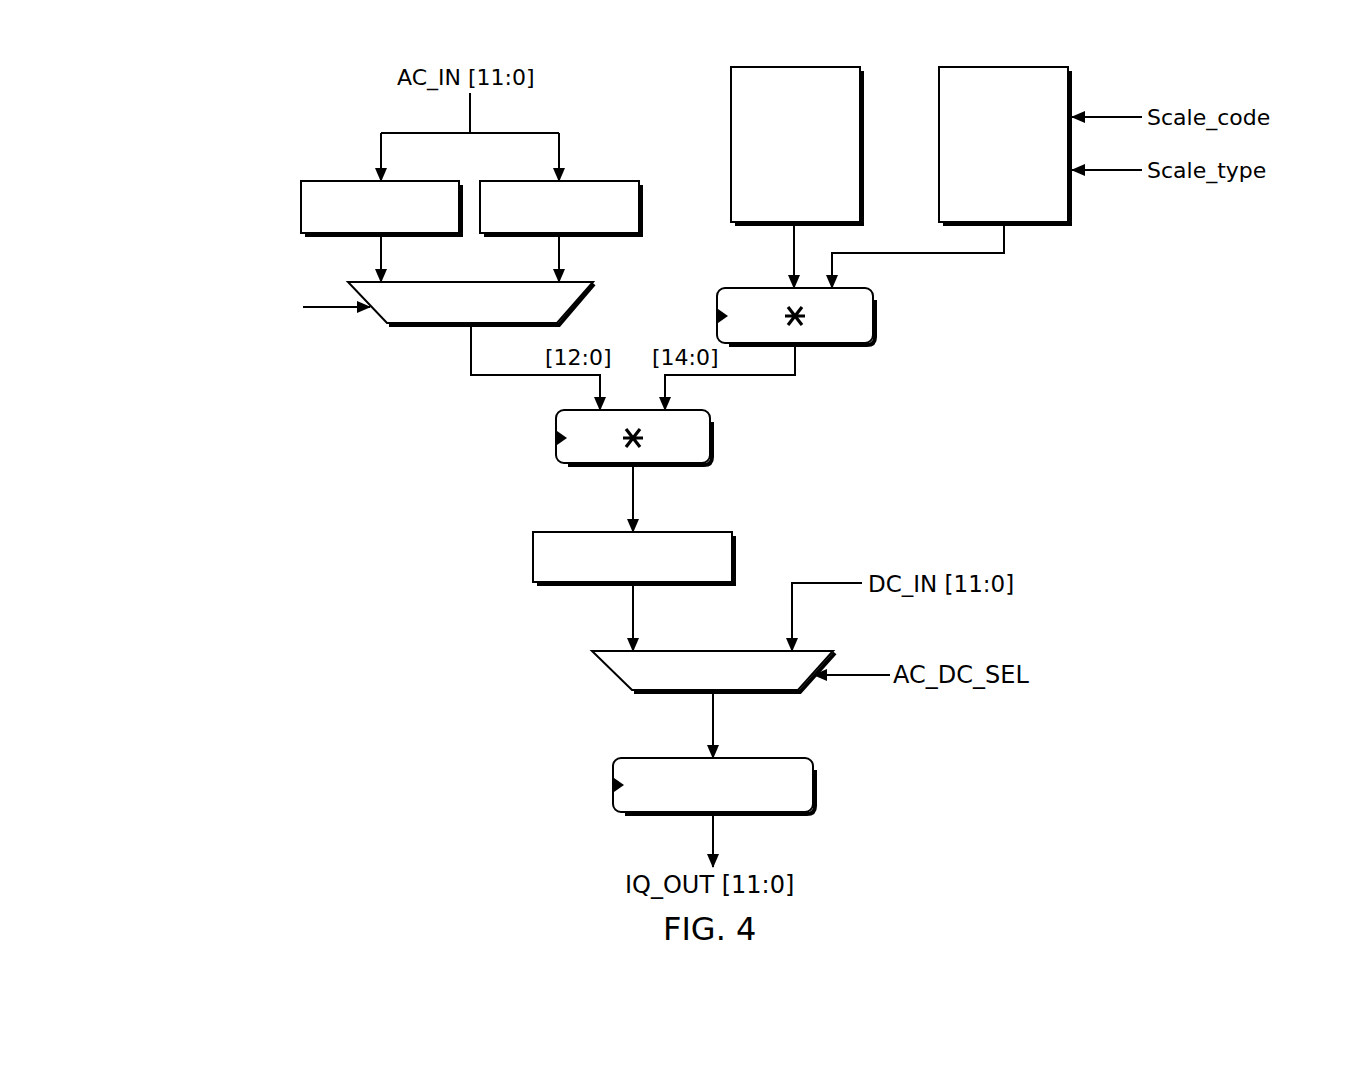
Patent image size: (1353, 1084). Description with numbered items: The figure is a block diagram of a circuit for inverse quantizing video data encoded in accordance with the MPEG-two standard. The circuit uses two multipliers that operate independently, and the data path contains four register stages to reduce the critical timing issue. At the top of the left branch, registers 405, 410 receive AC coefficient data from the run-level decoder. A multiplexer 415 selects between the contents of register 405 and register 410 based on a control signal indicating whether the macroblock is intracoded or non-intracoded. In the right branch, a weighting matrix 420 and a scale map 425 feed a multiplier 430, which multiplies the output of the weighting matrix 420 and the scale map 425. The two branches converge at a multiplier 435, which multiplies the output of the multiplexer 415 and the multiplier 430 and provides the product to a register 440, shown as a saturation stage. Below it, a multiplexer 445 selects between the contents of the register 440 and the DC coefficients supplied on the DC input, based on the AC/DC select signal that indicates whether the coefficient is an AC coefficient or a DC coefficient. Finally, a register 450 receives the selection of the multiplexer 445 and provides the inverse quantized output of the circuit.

The register 405 is at (301, 209).
The register 410 is at (639, 208).
The multiplexer 415 is at (433, 325).
The weighting matrix 420 is at (731, 146).
The scale map 425 is at (939, 146).
The multiplier 430 is at (873, 316).
The multiplier 435 is at (710, 433).
The register 440 is at (533, 556).
The multiplexer 445 is at (713, 651).
The register 450 is at (813, 784).